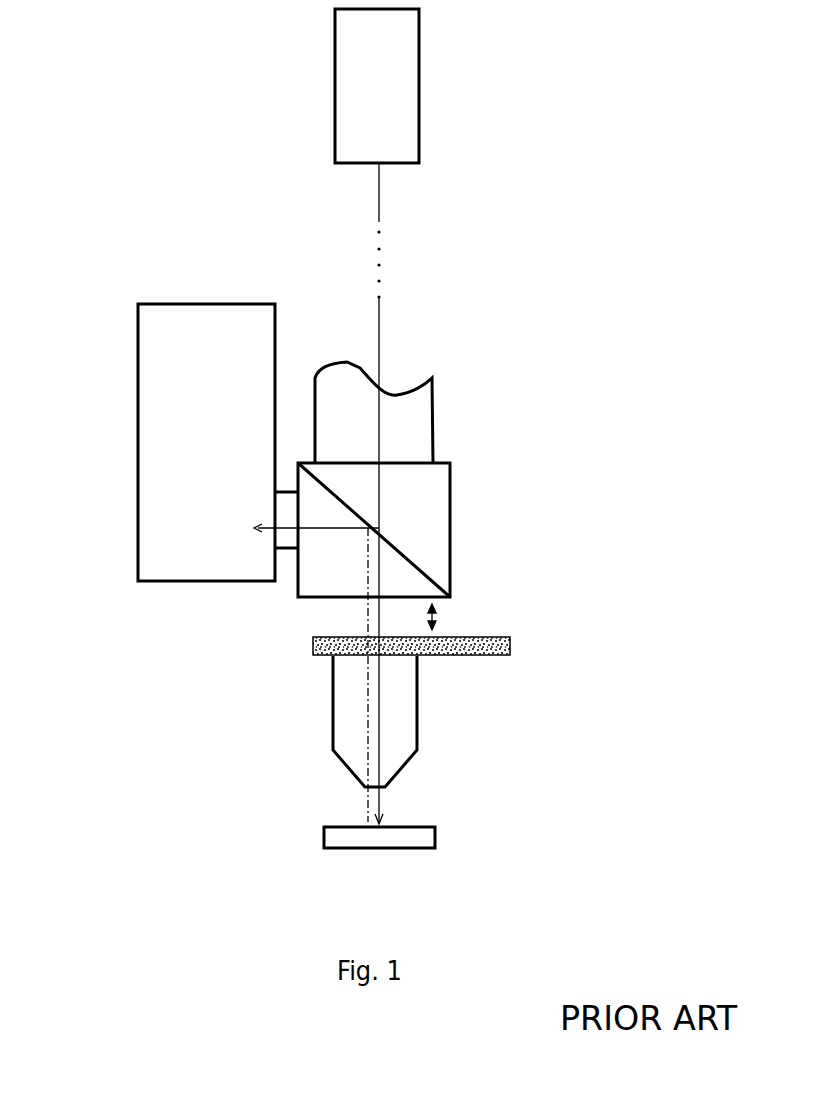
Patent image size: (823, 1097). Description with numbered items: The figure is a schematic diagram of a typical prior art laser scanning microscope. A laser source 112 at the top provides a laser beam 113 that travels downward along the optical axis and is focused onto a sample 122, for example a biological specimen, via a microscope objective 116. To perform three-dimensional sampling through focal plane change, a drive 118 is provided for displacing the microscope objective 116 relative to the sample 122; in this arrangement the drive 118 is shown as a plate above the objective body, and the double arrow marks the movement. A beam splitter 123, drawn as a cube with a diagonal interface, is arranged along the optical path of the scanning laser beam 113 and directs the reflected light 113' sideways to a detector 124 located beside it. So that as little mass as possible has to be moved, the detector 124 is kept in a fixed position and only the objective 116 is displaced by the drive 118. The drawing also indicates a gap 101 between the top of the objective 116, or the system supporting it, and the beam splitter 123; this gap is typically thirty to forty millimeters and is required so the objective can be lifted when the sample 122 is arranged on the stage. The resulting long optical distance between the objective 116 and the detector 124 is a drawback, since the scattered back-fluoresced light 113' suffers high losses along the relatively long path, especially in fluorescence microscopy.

The laser source 112 is at (420, 87).
The laser beam 113 is at (373, 493).
The reflected light 113' is at (279, 675).
The detector 124 is at (137, 463).
The beam splitter 123 is at (450, 528).
The gap 101 is at (453, 620).
The drive 118 is at (510, 642).
The microscope objective 116 is at (417, 745).
The sample 122 is at (435, 838).